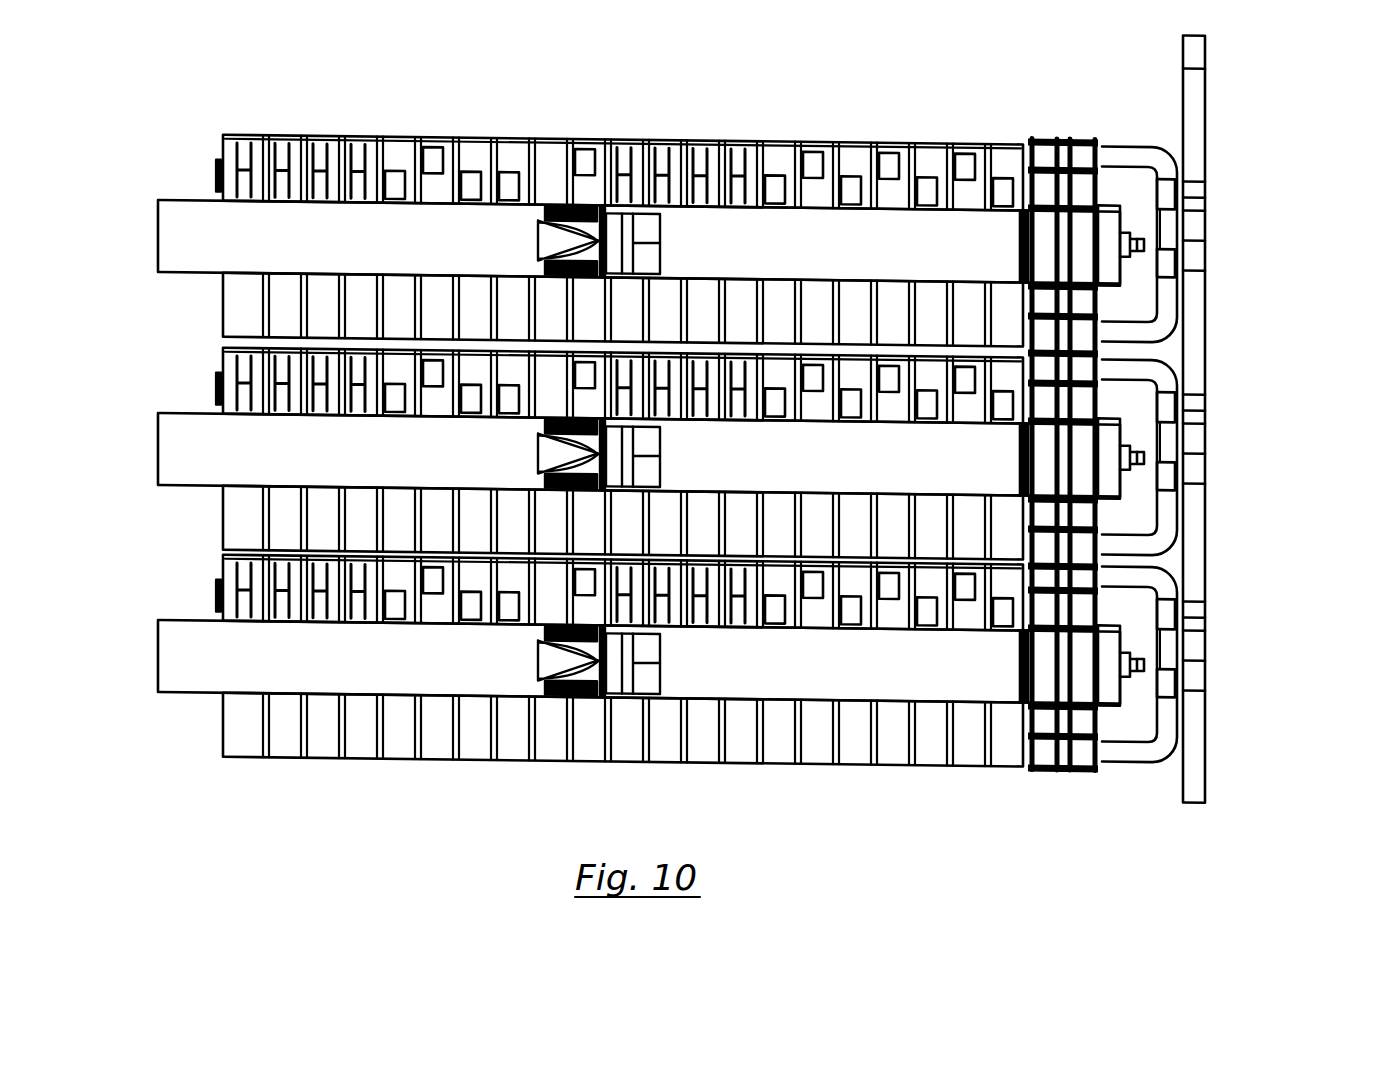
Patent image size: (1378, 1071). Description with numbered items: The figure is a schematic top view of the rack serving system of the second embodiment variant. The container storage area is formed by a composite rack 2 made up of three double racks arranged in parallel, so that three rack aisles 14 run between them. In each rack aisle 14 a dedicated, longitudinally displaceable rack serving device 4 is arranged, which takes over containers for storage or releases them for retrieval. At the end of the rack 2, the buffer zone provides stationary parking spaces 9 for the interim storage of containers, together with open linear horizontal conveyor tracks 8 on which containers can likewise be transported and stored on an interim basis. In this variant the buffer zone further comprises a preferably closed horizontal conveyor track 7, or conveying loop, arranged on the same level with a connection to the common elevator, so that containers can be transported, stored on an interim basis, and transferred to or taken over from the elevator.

The composite rack 2 is at (220, 133).
The rack serving device 4 is at (574, 197).
The horizontal conveyor track 7 is at (1128, 134).
The open linear horizontal conveyor track 8 is at (1078, 755).
The stationary parking space 9 is at (1038, 757).
The rack aisle 14 is at (358, 255).